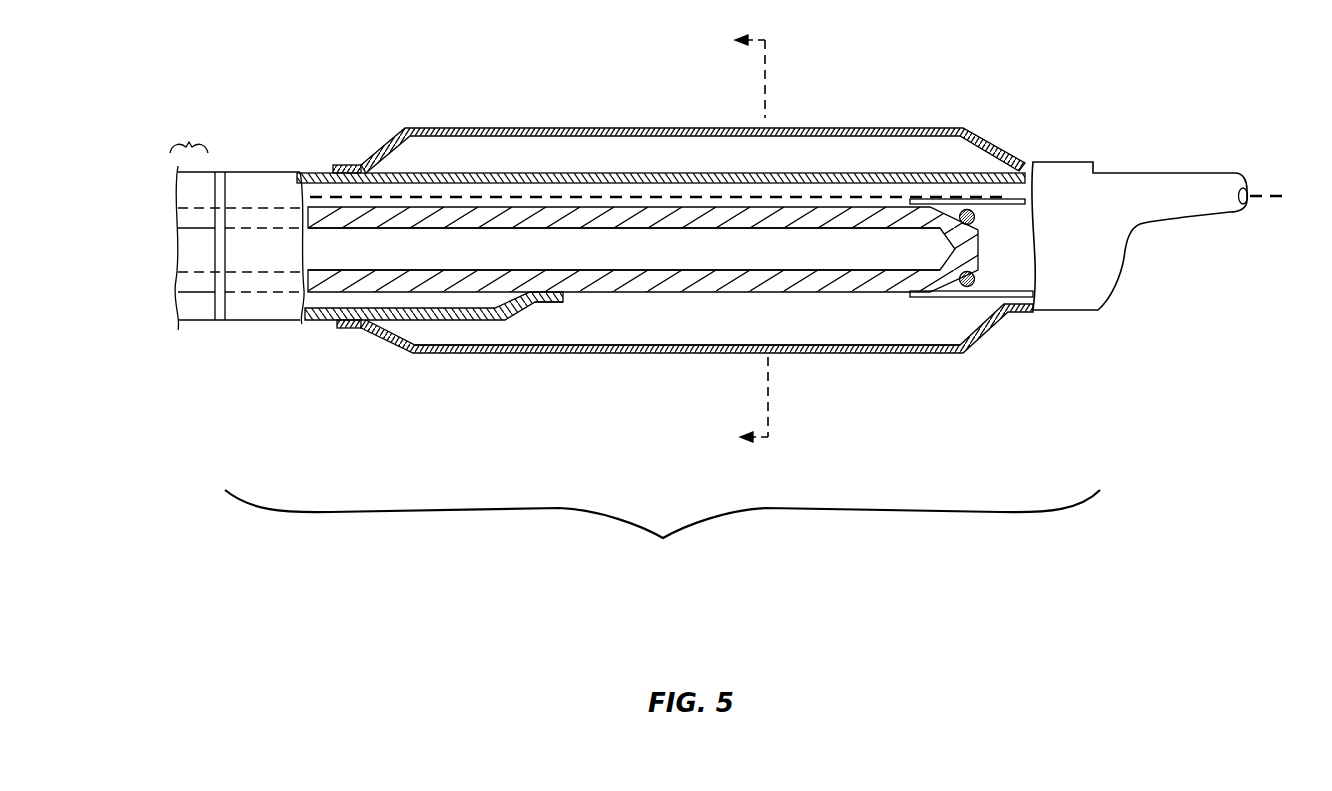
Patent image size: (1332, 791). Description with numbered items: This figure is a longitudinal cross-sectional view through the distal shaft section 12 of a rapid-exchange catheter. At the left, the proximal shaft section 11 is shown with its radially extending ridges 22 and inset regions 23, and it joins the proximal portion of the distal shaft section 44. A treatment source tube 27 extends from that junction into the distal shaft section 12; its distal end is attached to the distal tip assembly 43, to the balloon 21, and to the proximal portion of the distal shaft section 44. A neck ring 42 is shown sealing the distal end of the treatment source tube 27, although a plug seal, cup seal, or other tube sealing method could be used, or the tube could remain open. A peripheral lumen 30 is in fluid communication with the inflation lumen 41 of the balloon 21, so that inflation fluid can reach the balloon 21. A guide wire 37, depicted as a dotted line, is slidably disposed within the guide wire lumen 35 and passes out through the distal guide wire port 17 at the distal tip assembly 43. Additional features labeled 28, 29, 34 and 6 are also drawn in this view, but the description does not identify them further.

The proximal shaft section 11 is at (189, 131).
The distal shaft section 12 is at (662, 534).
The distal guide wire port 17 is at (1281, 165).
The balloon 21 is at (697, 222).
The radially extending ridges 22 is at (203, 248).
The inset regions 23 is at (221, 309).
The treatment source tube 27 is at (670, 274).
The lower outer tube wall 28 is at (419, 328).
The guidewire lumen 29 is at (641, 260).
The peripheral lumen 30 is at (386, 342).
The upper bond flange 34 is at (661, 148).
The guide wire lumen 35 is at (667, 148).
The guide wire 37 is at (1291, 177).
The inflation lumen 41 is at (606, 333).
The neck ring 42 is at (1005, 298).
The distal tip assembly 43 is at (1139, 256).
The proximal portion of distal shaft section 44 is at (228, 268).
The section line 6- 6 is at (739, 239).